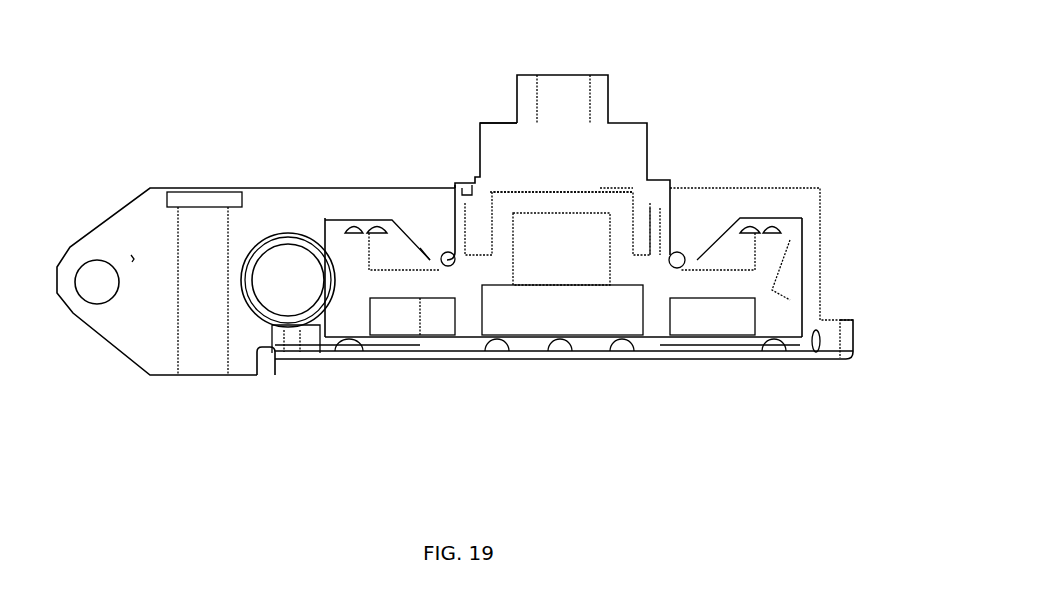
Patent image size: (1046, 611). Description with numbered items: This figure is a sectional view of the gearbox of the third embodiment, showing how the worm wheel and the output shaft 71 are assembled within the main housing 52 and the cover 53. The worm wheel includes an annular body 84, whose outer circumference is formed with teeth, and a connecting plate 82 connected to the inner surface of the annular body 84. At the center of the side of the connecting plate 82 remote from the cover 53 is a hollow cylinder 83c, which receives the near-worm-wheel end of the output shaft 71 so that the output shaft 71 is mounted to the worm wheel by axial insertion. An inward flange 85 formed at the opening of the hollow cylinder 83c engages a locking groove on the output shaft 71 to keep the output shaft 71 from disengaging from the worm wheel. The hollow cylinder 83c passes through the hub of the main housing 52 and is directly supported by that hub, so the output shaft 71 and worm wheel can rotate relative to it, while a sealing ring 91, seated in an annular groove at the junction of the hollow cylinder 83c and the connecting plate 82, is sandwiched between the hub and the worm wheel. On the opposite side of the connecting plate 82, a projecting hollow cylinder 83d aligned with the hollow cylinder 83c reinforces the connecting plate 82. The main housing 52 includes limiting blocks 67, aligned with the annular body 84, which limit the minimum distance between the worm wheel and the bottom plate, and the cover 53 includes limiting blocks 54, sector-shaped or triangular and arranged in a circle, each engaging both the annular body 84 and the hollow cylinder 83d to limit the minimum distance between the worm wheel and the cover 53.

The main housing 52 is at (265, 205).
The cover 53 is at (403, 357).
The limiting blocks 54 is at (698, 342).
The limiting blocks 67 is at (352, 227).
The output shaft 71 is at (633, 132).
The connecting plate 82 is at (405, 283).
The hollow cylinder 83c is at (430, 262).
The hollow cylinder 83d is at (467, 313).
The annular body 84 is at (767, 290).
The inward flange 85 is at (468, 192).
The sealing ring 91 is at (677, 253).